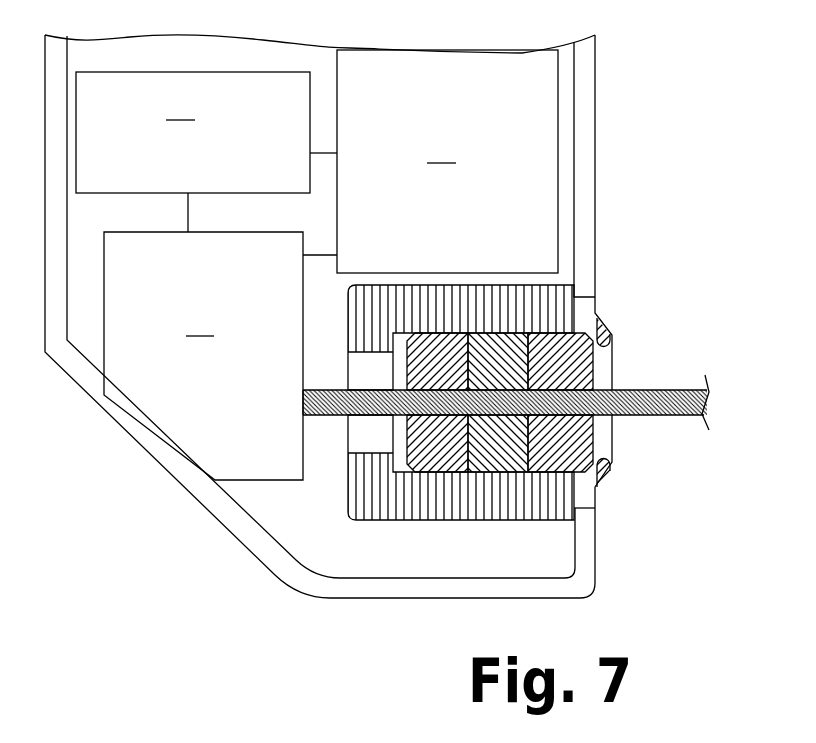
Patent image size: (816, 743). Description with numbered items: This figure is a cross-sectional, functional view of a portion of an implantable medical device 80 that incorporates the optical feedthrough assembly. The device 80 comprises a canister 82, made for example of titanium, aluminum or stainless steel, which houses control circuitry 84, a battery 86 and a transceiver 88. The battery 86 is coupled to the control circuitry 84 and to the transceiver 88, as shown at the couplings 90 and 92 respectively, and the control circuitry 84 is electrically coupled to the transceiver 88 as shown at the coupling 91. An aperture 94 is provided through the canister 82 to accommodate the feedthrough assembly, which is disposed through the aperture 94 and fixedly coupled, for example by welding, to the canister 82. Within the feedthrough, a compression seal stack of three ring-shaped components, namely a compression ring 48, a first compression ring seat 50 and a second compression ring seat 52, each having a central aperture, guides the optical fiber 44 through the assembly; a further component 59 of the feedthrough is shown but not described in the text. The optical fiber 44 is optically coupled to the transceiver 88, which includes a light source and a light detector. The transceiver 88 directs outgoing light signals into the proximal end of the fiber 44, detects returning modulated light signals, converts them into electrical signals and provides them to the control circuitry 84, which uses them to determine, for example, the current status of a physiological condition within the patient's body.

The implantable medical device 80 is at (685, 118).
The canister 82 is at (262, 532).
The control circuitry 84 is at (193, 132).
The battery 86 is at (447, 161).
The transceiver 88 is at (203, 356).
The coupling of battery to control circuitry 90 is at (320, 152).
The electrical coupling of control circuitry to transceiver 91 is at (188, 222).
The coupling of battery to transceiver 92 is at (322, 255).
The aperture 94 is at (595, 297).
The optical fiber 44 is at (637, 387).
The compression ring 48 is at (497, 450).
The first compression ring seat 50 is at (583, 443).
The second compression ring seat 52 is at (440, 460).
The stator 59 is at (402, 455).